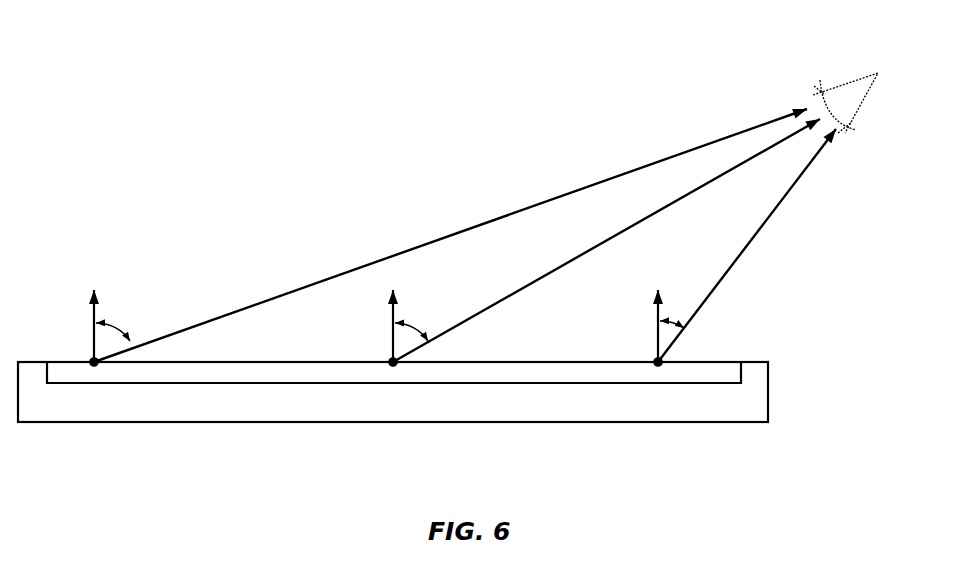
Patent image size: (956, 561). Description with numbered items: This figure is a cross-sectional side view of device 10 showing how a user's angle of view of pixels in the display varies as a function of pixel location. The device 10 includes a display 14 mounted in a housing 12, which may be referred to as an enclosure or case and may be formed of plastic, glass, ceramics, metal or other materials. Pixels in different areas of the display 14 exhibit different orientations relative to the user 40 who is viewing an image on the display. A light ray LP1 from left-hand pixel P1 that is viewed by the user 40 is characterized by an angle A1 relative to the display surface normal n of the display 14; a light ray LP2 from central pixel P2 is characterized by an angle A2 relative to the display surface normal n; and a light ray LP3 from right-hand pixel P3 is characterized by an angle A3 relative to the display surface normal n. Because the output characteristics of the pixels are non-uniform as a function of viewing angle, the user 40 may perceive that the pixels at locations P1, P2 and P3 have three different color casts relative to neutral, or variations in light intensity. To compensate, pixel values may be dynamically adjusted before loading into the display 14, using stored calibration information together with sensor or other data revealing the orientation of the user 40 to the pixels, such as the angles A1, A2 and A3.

The device 10 is at (824, 232).
The housing 12 is at (742, 410).
The display 14 is at (731, 367).
The user 40 is at (840, 90).
The display surface normal n is at (375, 314).
The left-hand pixel P1 is at (94, 366).
The central pixel P2 is at (393, 366).
The right-hand pixel P3 is at (658, 366).
The light ray LP1 is at (450, 235).
The light ray LP2 is at (606, 240).
The light ray LP3 is at (747, 245).
The angle A1 is at (118, 322).
The angle A2 is at (417, 321).
The angle A3 is at (676, 308).